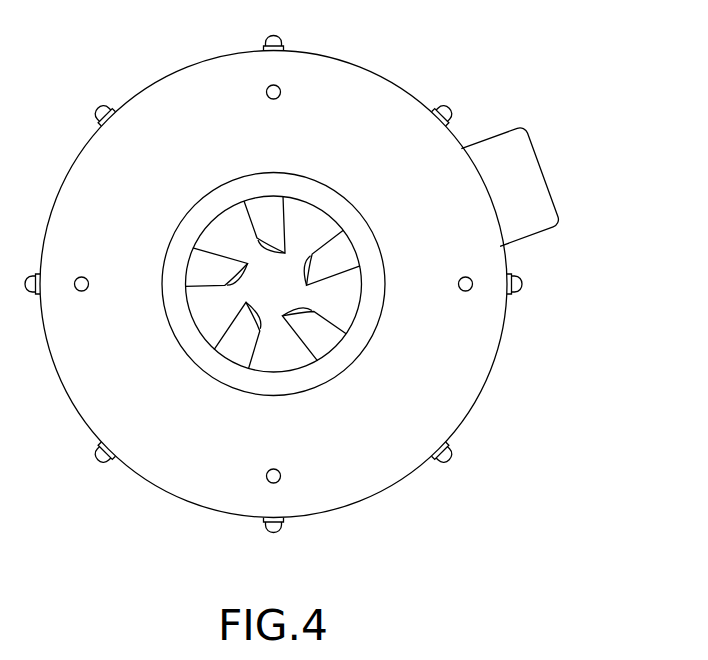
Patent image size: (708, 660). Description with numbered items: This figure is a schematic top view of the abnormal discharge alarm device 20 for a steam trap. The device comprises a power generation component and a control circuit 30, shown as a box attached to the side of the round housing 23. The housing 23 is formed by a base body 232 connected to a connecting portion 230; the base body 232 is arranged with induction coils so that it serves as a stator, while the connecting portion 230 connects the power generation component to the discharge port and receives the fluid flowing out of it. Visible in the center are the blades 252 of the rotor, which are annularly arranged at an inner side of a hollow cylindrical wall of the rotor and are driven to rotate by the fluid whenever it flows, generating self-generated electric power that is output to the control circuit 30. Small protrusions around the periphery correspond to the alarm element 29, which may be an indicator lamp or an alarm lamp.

The abnormal discharge alarm device 20 is at (546, 45).
The housing 23 is at (618, 323).
The connecting portion 230 is at (373, 300).
The base body 232 is at (468, 390).
The alarm element 29 is at (453, 457).
The control circuit 30 is at (532, 178).
The blades 252 is at (312, 340).